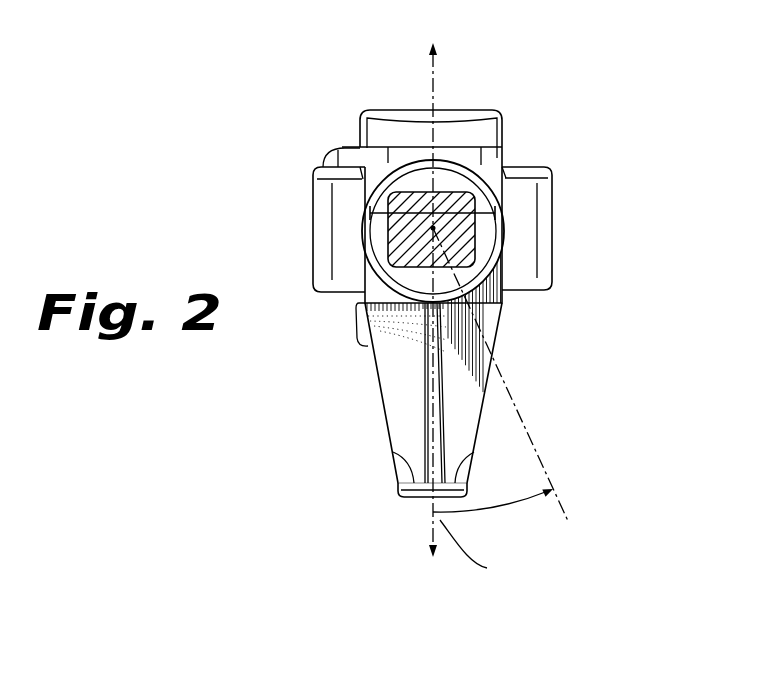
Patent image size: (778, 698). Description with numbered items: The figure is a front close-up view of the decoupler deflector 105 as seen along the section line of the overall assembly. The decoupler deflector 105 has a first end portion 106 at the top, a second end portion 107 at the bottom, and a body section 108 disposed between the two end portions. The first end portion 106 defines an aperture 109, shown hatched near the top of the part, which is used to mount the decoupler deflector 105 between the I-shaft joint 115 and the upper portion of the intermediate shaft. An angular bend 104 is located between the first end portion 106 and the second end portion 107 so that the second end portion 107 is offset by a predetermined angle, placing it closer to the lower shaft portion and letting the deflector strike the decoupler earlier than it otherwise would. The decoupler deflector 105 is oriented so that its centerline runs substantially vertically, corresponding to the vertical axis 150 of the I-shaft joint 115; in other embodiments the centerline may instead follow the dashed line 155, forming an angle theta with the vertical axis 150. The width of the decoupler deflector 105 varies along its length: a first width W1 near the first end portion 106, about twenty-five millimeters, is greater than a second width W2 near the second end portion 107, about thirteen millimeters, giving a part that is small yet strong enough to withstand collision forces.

The angular bend 104 is at (503, 302).
The decoupler deflector 105 is at (373, 373).
The first end portion 106 is at (410, 163).
The second end portion 107 is at (398, 483).
The body section 108 is at (368, 348).
The aperture 109 is at (455, 196).
The I-shaft joint 115 is at (540, 168).
The vertical axis 150 is at (433, 525).
The dashed line 155 is at (537, 442).
The first width W1 is at (378, 207).
The second width W2 is at (392, 447).